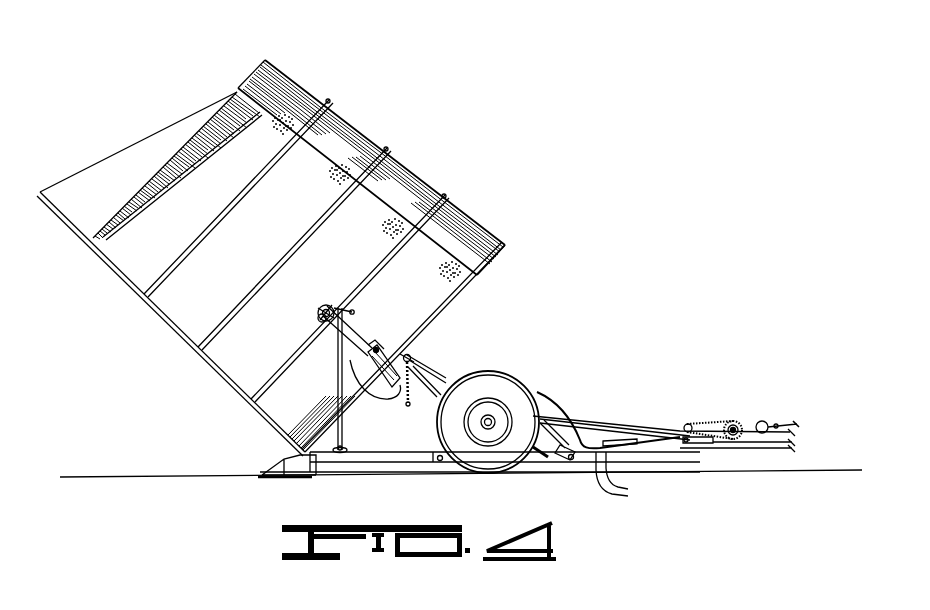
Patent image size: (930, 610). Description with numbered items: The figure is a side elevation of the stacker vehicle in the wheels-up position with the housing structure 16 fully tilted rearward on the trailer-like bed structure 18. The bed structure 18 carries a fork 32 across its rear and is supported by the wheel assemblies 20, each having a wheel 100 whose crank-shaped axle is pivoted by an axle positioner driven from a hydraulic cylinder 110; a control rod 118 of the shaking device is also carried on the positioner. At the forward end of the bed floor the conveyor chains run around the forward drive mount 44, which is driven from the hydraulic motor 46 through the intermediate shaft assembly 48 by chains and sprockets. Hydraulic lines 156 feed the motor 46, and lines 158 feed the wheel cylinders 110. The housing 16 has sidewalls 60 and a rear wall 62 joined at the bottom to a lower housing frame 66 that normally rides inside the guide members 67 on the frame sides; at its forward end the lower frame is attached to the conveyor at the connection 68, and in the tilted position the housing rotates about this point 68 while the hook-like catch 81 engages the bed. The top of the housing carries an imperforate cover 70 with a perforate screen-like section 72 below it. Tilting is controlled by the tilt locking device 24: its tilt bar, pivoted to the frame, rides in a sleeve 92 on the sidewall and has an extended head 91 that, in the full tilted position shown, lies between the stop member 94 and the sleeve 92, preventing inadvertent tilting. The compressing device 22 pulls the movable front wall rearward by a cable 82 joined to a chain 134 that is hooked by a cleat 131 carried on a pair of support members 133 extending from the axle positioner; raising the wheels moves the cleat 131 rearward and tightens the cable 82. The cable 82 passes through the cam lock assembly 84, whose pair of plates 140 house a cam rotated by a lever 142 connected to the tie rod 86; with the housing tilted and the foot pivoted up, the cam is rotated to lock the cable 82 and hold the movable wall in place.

The housing structure 16 is at (246, 42).
The stacker vehicle bed structure 18 is at (277, 479).
The wheel assembly 20 is at (499, 482).
The compressing device 22 is at (455, 346).
The tilt locking device 24 is at (367, 325).
The fork 32 is at (295, 465).
The forward drive mount 44 is at (686, 425).
The hydraulic motor 46 is at (765, 421).
The intermediate shaft assembly 48 is at (730, 420).
The sidewall 60 is at (137, 255).
The rear wall 62 is at (120, 155).
The lower housing frame 66 is at (156, 305).
The guide member 67 is at (638, 438).
The conveyor attachment 68 is at (298, 450).
The imperforate cover portion 70 is at (390, 167).
The perforate screen-like section 72 is at (478, 278).
The hook-like catch 81 is at (325, 446).
The cable 82 is at (334, 352).
The cam lock assembly 84 is at (308, 305).
The tie rod 86 is at (338, 386).
The extended head 91 is at (377, 352).
The sleeve 92 is at (386, 402).
The stop member 94 is at (375, 348).
The wheel 100 is at (498, 385).
The hydraulic cylinder 110 is at (545, 415).
The control rod 118 is at (586, 420).
The cleat 131 is at (440, 353).
The support members 133 is at (443, 378).
The chain 134 is at (393, 407).
The plates 140 is at (326, 305).
The lever 142 is at (338, 303).
The hydraulic lines 156 is at (778, 420).
The hydraulic lines 158 is at (629, 494).